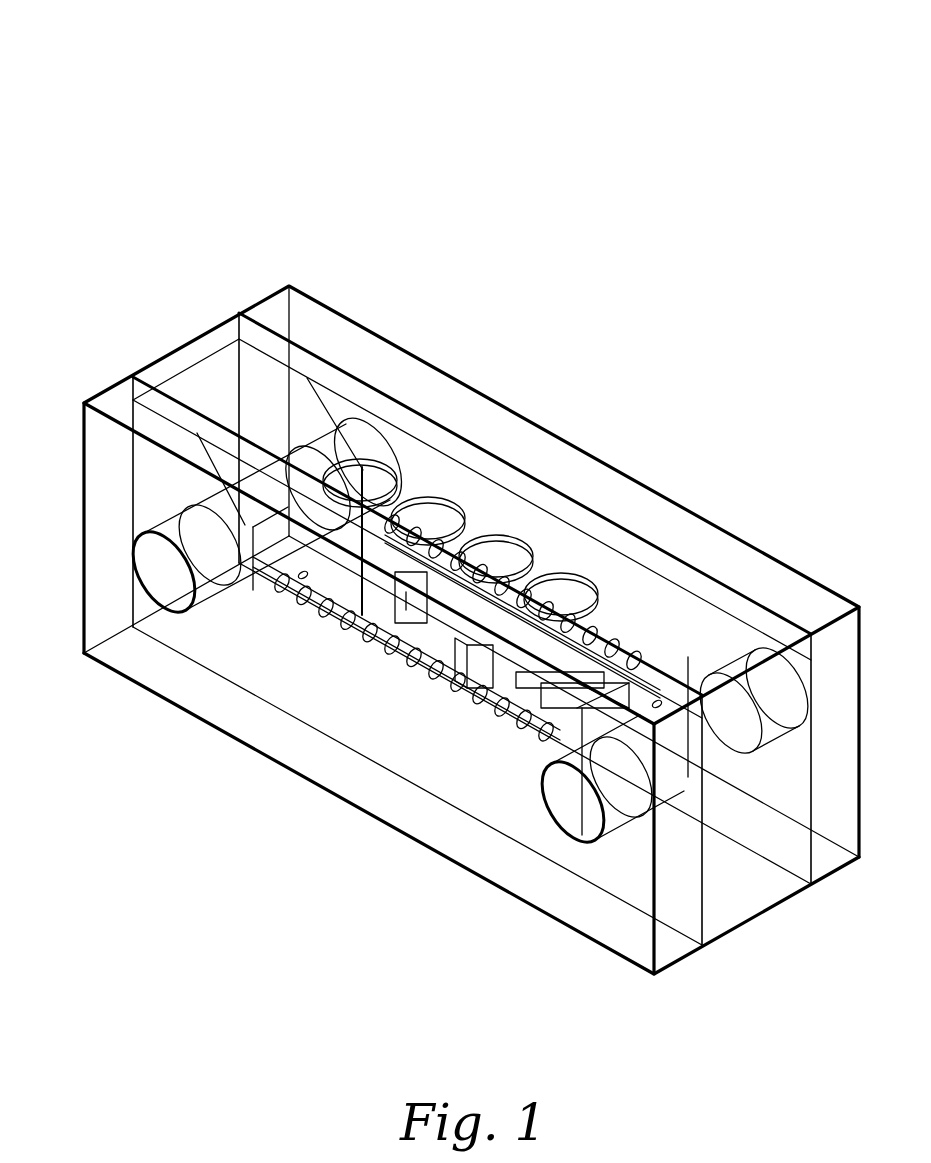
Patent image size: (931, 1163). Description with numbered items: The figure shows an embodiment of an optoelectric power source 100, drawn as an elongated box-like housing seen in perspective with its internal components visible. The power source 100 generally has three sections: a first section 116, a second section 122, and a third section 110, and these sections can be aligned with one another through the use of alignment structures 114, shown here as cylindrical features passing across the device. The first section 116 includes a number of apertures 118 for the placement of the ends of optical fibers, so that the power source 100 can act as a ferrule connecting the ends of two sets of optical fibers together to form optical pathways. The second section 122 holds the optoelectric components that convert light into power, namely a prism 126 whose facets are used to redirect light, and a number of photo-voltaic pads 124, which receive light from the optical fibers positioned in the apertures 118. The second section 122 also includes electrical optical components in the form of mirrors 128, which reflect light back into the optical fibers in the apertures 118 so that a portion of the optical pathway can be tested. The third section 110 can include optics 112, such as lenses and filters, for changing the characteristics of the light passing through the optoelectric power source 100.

The optoelectric power source 100 is at (176, 94).
The third section 110 is at (114, 388).
The optics 112 is at (298, 590).
The alignment structures 114 is at (163, 574).
The first section 116 is at (275, 293).
The apertures 118 is at (623, 647).
The second section 122 is at (182, 348).
The photo-voltaic pads 124 is at (528, 537).
The prism 126 is at (432, 644).
The mirrors 128 is at (405, 596).